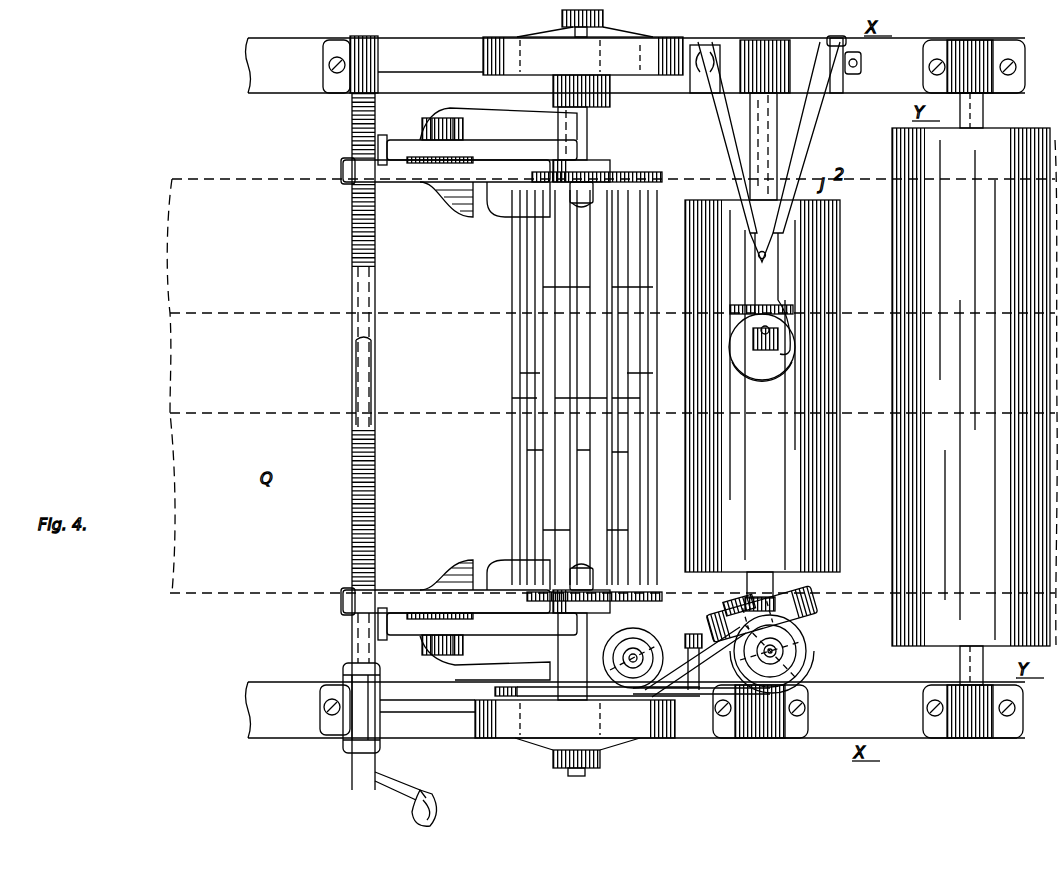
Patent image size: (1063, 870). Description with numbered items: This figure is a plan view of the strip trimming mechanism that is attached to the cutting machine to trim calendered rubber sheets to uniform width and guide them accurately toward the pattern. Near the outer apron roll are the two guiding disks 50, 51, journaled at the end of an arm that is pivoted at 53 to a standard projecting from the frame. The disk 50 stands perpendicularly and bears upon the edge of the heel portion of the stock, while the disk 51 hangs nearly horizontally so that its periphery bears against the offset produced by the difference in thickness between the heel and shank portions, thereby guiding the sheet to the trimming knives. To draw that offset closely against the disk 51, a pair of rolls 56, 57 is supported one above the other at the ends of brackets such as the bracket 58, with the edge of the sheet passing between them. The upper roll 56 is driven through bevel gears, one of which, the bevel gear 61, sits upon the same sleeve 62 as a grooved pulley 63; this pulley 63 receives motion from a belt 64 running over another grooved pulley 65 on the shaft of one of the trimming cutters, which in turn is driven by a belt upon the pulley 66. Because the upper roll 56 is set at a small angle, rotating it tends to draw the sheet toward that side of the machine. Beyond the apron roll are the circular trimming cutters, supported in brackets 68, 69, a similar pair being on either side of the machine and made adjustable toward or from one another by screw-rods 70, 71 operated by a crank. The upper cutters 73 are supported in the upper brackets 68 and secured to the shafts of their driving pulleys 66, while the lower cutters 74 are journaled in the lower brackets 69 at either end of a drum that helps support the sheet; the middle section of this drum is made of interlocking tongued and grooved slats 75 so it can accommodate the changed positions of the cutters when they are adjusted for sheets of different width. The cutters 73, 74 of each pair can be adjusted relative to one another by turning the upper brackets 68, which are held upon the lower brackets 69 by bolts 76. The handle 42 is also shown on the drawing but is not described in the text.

The handle 42 is at (435, 805).
The guiding disk 50 is at (752, 292).
The guiding disk 51 is at (751, 372).
The pivot 53 is at (722, 75).
The upper roll 56 is at (808, 606).
The lower roll 57 is at (724, 606).
The bracket 58 is at (701, 662).
The bevel gear 61 is at (652, 658).
The sleeve 62 is at (812, 118).
The grooved pulley 63 is at (807, 664).
The belt 64 is at (494, 692).
The grooved pulley 65 is at (513, 672).
The pulley 66 is at (493, 746).
The upper bracket 68 is at (477, 395).
The lower bracket 69 is at (488, 205).
The screw-rod 70 is at (350, 512).
The screw-rod 71 is at (352, 283).
The upper cutter 73 is at (624, 178).
The lower cutter 74 is at (670, 178).
The slats 75 is at (584, 387).
The bolts 76 is at (447, 120).